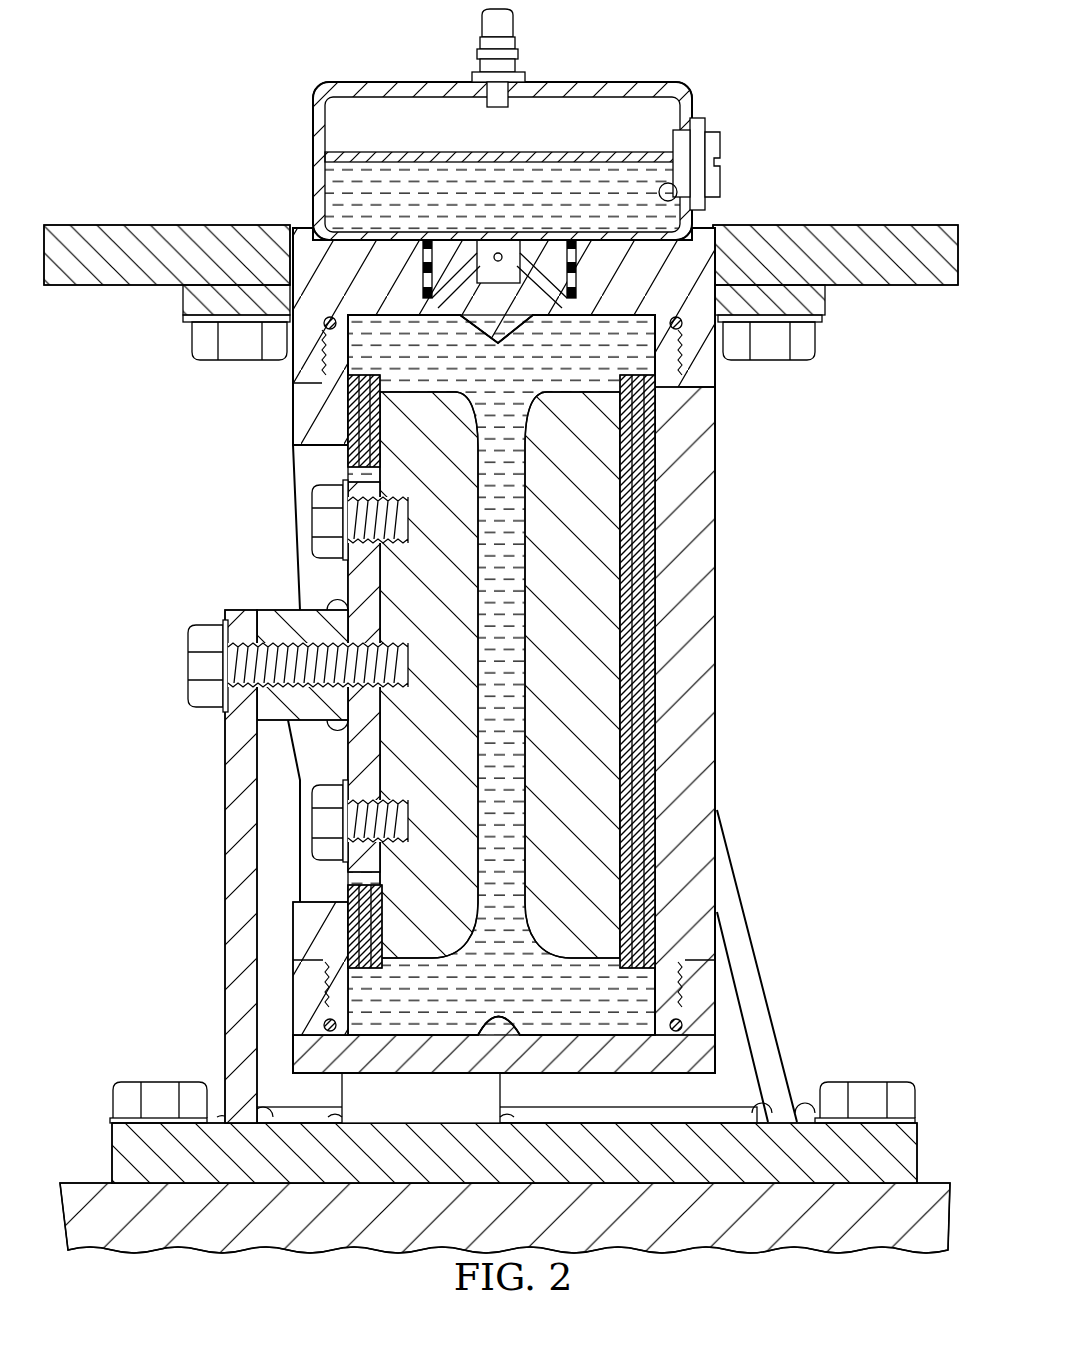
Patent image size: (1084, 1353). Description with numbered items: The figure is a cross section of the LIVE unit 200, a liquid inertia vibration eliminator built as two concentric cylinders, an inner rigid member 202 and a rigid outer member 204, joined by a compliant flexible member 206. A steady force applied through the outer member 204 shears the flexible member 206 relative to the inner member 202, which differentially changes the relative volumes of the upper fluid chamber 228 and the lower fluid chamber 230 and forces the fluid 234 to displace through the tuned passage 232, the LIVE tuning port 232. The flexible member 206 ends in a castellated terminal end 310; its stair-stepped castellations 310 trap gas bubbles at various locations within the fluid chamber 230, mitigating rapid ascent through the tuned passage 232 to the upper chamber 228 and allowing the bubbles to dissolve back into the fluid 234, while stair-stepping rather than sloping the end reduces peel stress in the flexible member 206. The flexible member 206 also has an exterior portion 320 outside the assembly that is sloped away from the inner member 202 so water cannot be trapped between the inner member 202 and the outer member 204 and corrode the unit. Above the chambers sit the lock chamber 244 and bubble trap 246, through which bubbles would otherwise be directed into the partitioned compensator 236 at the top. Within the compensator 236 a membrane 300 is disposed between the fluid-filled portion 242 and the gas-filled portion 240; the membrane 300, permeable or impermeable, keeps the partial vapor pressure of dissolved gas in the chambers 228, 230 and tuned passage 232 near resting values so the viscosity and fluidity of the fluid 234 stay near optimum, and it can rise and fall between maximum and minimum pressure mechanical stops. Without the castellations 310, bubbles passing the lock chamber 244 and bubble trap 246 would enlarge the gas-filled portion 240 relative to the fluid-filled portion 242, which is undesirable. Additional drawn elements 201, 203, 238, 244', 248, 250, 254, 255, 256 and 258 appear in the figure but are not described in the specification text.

The LIVE unit 200 is at (473, 561).
The ground / floor 201 is at (95, 1247).
The inner rigid member 202 is at (500, 675).
The mounting flange 203 is at (100, 236).
The rigid outer member 204 is at (708, 498).
The flexible member 206 is at (655, 707).
The upper fluid chamber 228 is at (522, 393).
The fluid chamber 230 is at (522, 996).
The tuned passage 232 is at (485, 620).
The fluid 234 is at (413, 963).
The partitioned compensator 236 is at (514, 123).
The reservoir cover 238 is at (598, 107).
The gas-filled portion 240 is at (347, 127).
The fluid-filled portion 242 is at (458, 168).
The lock chamber 244 is at (389, 268).
The valve 244' is at (612, 268).
The bubble trap 246 is at (385, 318).
The fluid passage 248 is at (607, 316).
The valve body 250 is at (548, 297).
The damping fluid 254 is at (548, 247).
The fitting 255 is at (720, 146).
The port 256 is at (677, 190).
The fill valve 258 is at (515, 25).
The membrane 300 is at (405, 152).
The castellated terminal end 310 is at (384, 972).
The exterior portion 320 is at (352, 468).